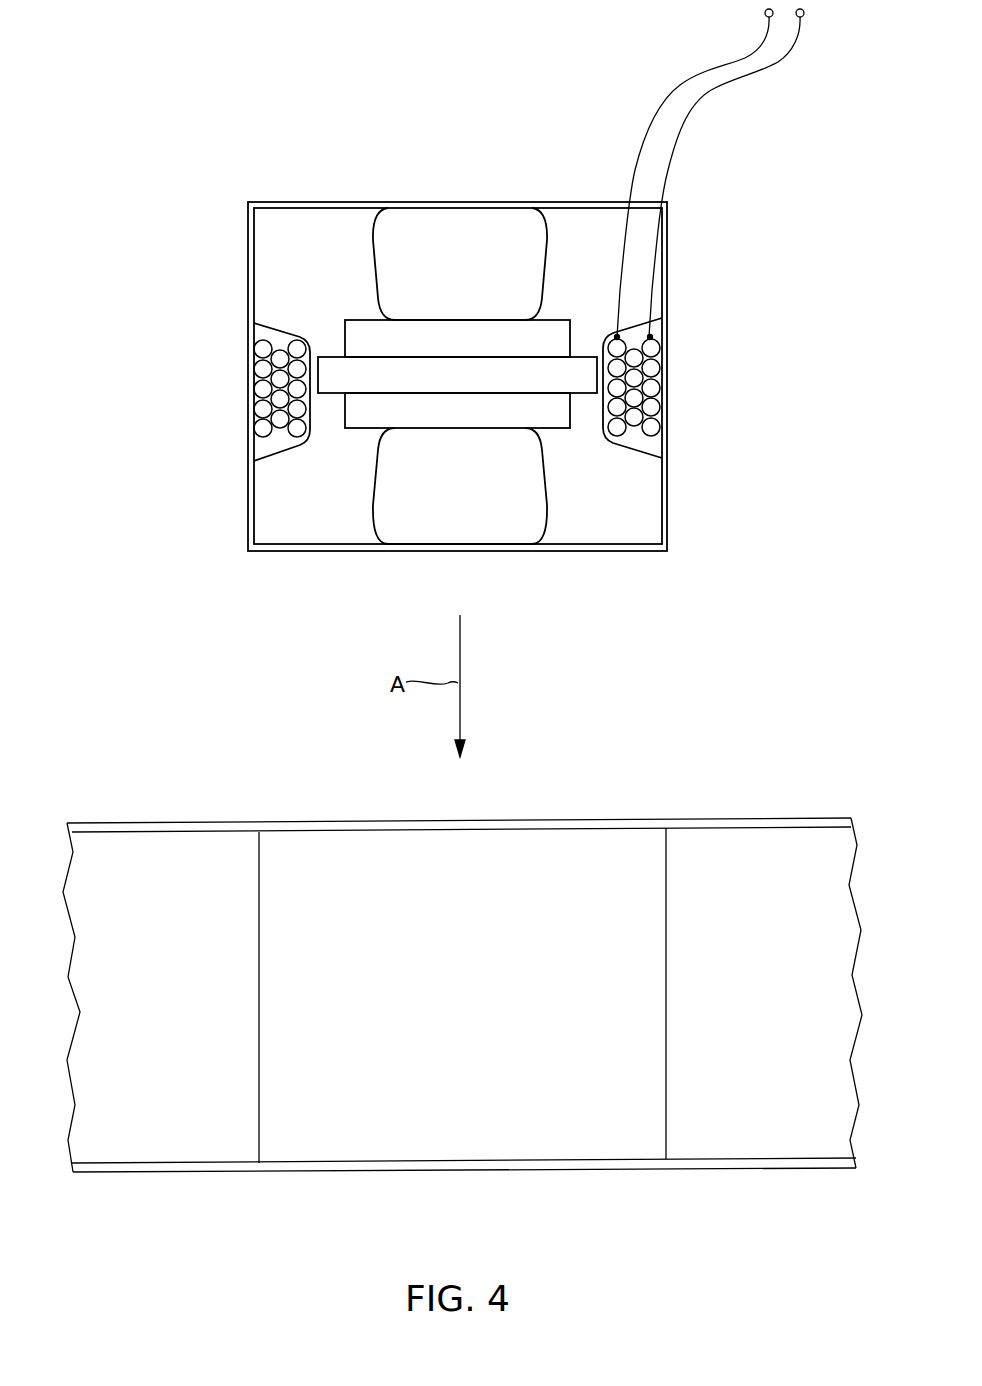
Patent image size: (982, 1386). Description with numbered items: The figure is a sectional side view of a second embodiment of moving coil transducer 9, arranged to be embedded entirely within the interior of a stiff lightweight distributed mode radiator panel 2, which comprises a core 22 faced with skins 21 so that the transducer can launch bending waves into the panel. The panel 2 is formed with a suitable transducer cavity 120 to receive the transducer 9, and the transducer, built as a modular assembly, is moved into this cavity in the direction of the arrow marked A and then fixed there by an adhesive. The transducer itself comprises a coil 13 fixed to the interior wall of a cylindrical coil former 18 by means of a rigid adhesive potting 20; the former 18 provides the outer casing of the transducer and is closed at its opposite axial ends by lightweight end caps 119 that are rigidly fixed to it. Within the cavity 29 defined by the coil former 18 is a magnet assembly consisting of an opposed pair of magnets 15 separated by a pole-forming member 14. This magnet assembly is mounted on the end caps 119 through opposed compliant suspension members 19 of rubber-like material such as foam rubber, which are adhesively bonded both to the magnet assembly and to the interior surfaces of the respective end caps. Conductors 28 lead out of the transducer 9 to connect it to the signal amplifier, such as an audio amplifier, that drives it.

The distributed mode radiator panel 2 is at (146, 818).
The transducer 9 is at (275, 190).
The coil 13 is at (280, 420).
The pole-forming member 14 is at (331, 356).
The magnets 15 is at (553, 328).
The coil former 18 is at (665, 512).
The compliant suspension members 19 is at (405, 220).
The rigid adhesive potting 20 is at (250, 528).
The skins 21 is at (716, 818).
The core 22 is at (797, 845).
The conductors 28 is at (695, 100).
The cavity 29 is at (597, 520).
The end caps 119 is at (467, 200).
The transducer cavity 120 is at (325, 848).